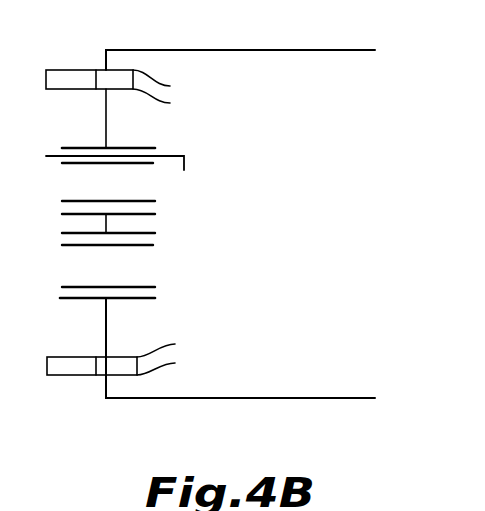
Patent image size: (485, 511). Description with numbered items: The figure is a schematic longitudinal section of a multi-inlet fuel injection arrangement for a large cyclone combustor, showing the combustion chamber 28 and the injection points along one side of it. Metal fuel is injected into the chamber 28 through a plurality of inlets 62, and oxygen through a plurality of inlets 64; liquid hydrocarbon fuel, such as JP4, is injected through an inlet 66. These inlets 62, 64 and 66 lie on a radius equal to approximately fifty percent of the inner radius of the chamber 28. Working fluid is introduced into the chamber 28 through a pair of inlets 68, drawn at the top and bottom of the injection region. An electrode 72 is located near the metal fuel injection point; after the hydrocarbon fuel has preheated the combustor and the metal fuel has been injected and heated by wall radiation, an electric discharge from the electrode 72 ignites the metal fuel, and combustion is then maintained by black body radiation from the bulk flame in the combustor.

The working fluid inlet 68 is at (73, 70).
The oxygen inlet 64 is at (135, 148).
The ignition electrode 72 is at (187, 153).
The metal fuel inlet 62 is at (147, 165).
The liquid hydrocarbon fuel inlet 66 is at (145, 248).
The chamber 28 is at (300, 266).